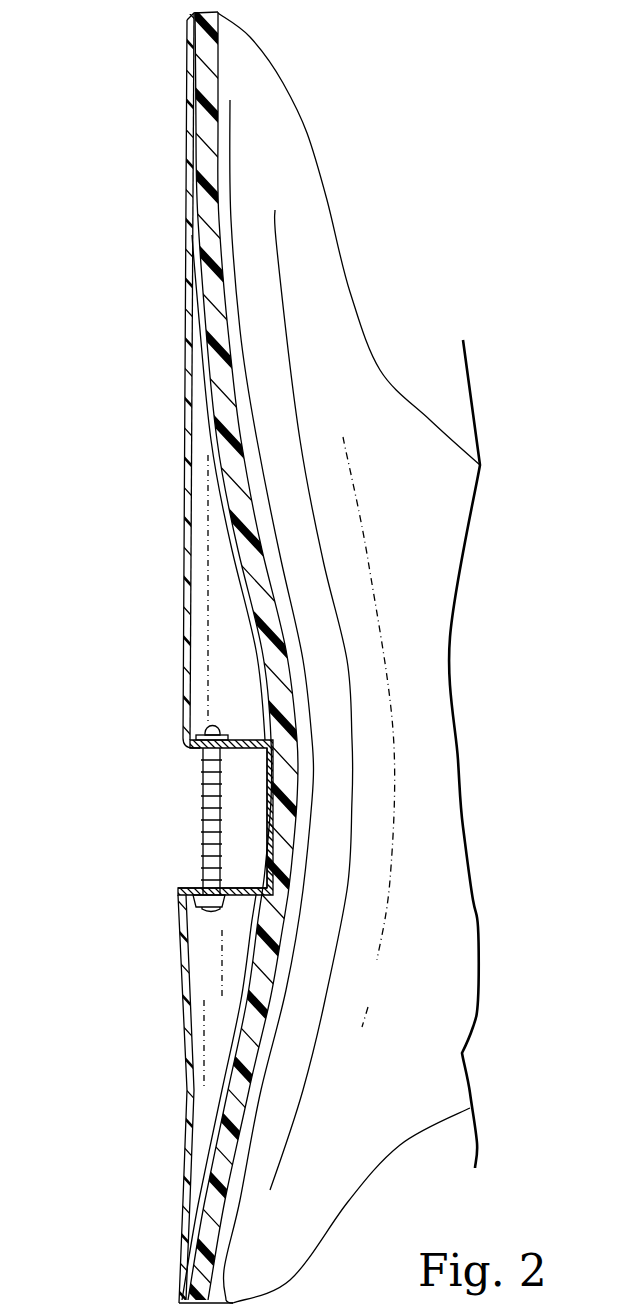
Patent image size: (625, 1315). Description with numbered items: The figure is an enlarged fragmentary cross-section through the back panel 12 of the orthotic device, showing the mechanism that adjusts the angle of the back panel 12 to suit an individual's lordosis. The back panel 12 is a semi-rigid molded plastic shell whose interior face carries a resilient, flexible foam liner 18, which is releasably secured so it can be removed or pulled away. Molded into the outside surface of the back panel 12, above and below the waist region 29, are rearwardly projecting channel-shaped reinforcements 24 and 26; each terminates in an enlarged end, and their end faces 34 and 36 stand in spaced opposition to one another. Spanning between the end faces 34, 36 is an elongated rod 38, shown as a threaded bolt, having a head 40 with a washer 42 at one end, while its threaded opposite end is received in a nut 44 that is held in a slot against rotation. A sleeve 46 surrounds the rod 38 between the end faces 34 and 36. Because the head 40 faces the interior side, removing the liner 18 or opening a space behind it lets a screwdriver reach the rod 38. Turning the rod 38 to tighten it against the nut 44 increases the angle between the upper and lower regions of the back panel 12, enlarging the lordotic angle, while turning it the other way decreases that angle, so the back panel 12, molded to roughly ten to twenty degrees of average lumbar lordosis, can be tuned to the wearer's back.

The liner 18 is at (205, 133).
The back panel 12 is at (227, 497).
The reinforcement 24 is at (190, 448).
The reinforcement 26 is at (187, 1055).
The end face 34 is at (230, 748).
The waist region 29 is at (268, 800).
The end face 36 is at (186, 893).
The nut 44 is at (201, 733).
The rod 38 is at (210, 827).
The sleeve 46 is at (202, 797).
The head 40 is at (213, 907).
The washer 42 is at (232, 910).